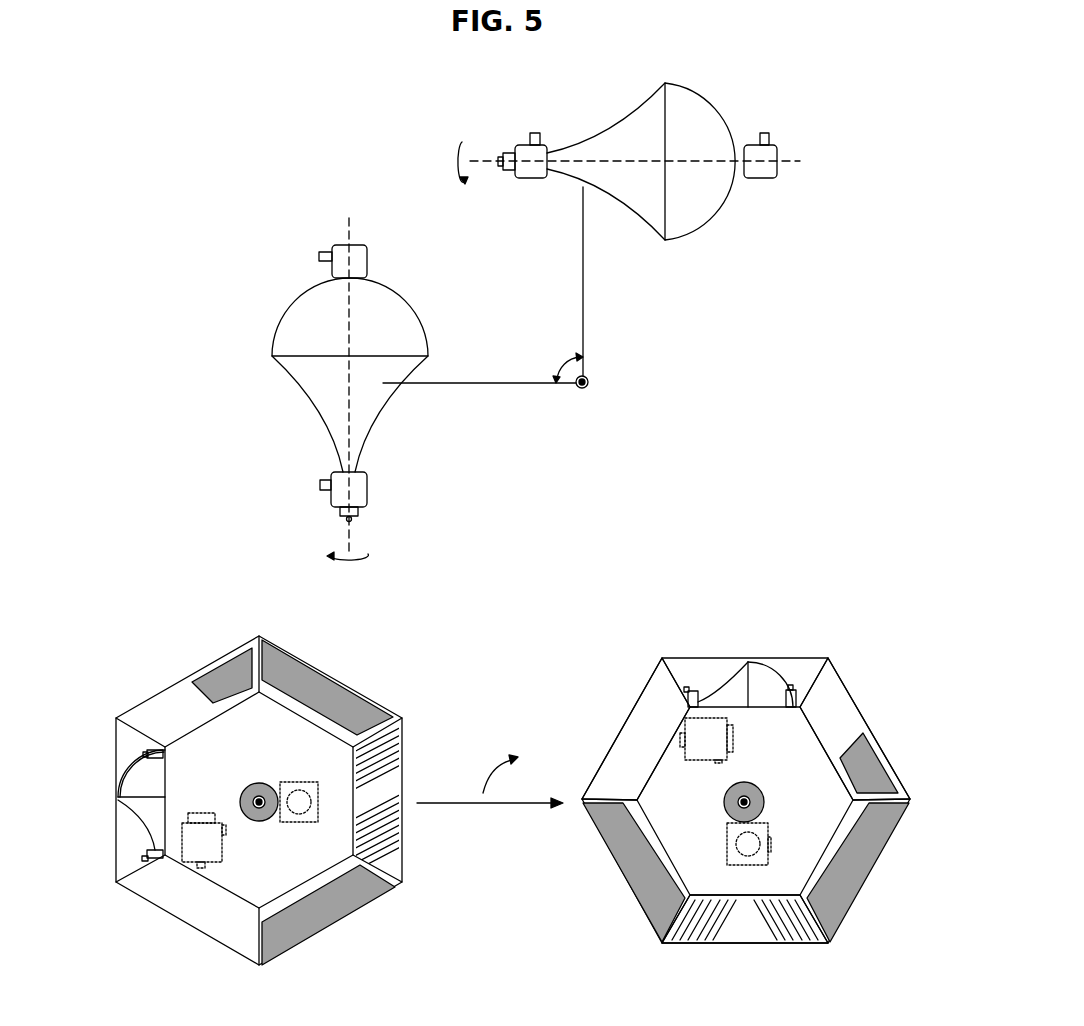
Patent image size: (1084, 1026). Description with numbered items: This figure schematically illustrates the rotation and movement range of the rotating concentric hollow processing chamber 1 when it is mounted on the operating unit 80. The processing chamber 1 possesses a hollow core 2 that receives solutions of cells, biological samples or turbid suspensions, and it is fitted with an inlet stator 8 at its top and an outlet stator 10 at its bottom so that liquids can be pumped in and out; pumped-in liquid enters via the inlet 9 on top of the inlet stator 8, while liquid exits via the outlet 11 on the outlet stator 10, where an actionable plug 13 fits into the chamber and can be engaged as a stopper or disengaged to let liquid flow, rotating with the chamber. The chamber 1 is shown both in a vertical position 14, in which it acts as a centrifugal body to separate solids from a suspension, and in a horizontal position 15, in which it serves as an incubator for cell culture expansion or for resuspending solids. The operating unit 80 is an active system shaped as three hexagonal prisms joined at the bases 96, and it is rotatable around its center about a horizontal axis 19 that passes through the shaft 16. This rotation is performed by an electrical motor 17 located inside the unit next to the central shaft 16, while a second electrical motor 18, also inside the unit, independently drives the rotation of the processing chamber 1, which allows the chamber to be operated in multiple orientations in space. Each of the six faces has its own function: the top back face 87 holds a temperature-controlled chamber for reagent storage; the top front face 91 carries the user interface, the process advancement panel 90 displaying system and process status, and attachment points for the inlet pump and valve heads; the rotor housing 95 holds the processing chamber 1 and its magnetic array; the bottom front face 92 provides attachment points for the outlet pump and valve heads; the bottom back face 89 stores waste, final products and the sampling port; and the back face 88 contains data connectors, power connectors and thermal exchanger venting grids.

The rotating concentric hollow processing chamber 1 is at (273, 335).
The hollow core 2 is at (128, 790).
The inlet stator 8 is at (370, 272).
The inlet 9 is at (319, 256).
The outlet stator 10 is at (370, 495).
The outlet 11 is at (320, 484).
The actionable plug 13 is at (350, 522).
The vertical position 14 is at (346, 534).
The horizontal position 15 is at (455, 157).
The shaft 16 is at (764, 806).
The electrical motor 17 is at (720, 848).
The second electrical motor 18 is at (680, 752).
The horizontal axis 19 is at (592, 382).
The operating unit 80 is at (165, 942).
The top back face 87 is at (330, 692).
The back face 88 is at (400, 822).
The bottom back face 89 is at (332, 908).
The process advancement panel 90 is at (868, 758).
The top front face 91 is at (830, 682).
The bottom front face 92 is at (653, 682).
The rotor housing 95 is at (712, 653).
The bases 96 is at (828, 947).